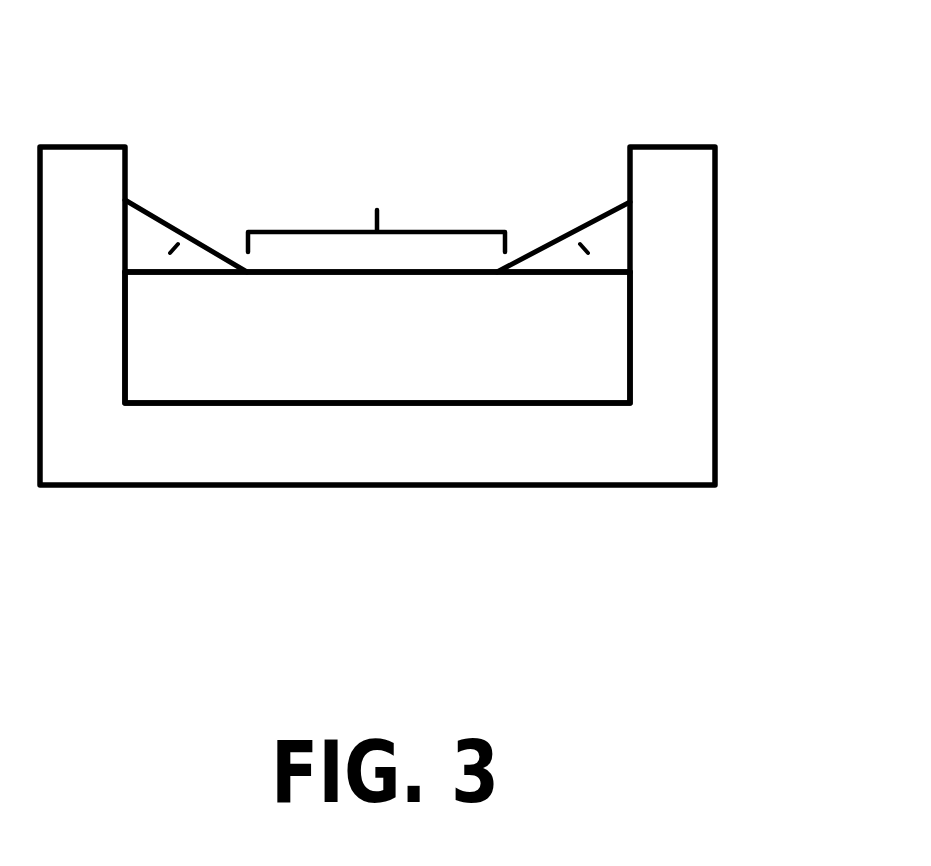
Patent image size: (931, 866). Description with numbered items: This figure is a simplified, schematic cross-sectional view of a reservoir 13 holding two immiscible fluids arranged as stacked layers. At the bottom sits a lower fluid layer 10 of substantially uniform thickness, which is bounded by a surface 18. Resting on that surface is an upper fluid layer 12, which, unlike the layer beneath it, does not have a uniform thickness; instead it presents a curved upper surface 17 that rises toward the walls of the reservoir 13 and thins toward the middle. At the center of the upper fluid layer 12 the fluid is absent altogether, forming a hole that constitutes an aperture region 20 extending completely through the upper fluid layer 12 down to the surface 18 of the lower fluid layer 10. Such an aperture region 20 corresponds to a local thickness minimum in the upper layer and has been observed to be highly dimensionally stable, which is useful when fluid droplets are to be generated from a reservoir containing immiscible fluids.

The lower fluid layer 10 is at (253, 385).
The upper fluid layer 12 is at (170, 253).
The reservoir 13 is at (705, 280).
The curved upper surface 17 is at (153, 222).
The surface 18 is at (375, 277).
The aperture region 20 is at (376, 202).